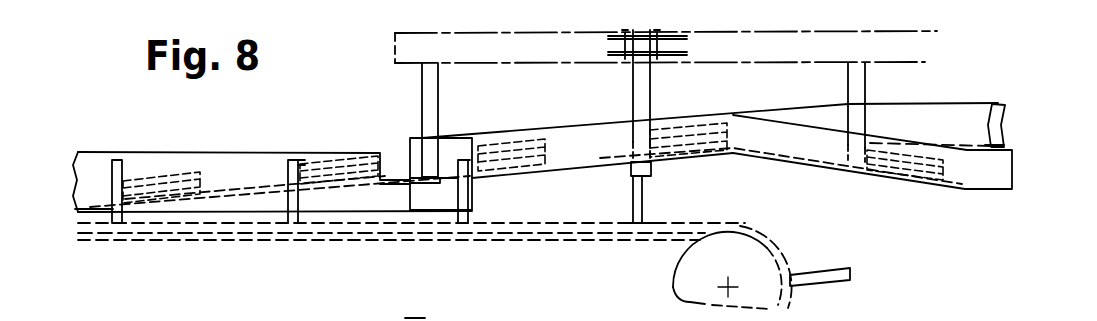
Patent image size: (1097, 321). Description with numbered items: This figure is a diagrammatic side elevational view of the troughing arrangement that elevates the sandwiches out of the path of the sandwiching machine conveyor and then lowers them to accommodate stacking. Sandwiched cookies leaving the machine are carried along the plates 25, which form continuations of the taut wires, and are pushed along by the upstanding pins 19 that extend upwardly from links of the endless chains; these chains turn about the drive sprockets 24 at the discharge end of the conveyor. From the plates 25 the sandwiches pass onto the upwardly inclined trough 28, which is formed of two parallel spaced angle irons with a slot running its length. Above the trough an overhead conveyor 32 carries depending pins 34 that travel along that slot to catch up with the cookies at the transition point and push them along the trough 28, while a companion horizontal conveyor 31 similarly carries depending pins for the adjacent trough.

The upstanding pins 19 is at (112, 170).
The drive sprockets 24 is at (672, 281).
The plates 25 is at (213, 192).
The trough 28 is at (550, 123).
The horizontal conveyor 31 is at (280, 305).
The conveyor 32 is at (648, 30).
The depending pins 34 is at (650, 100).